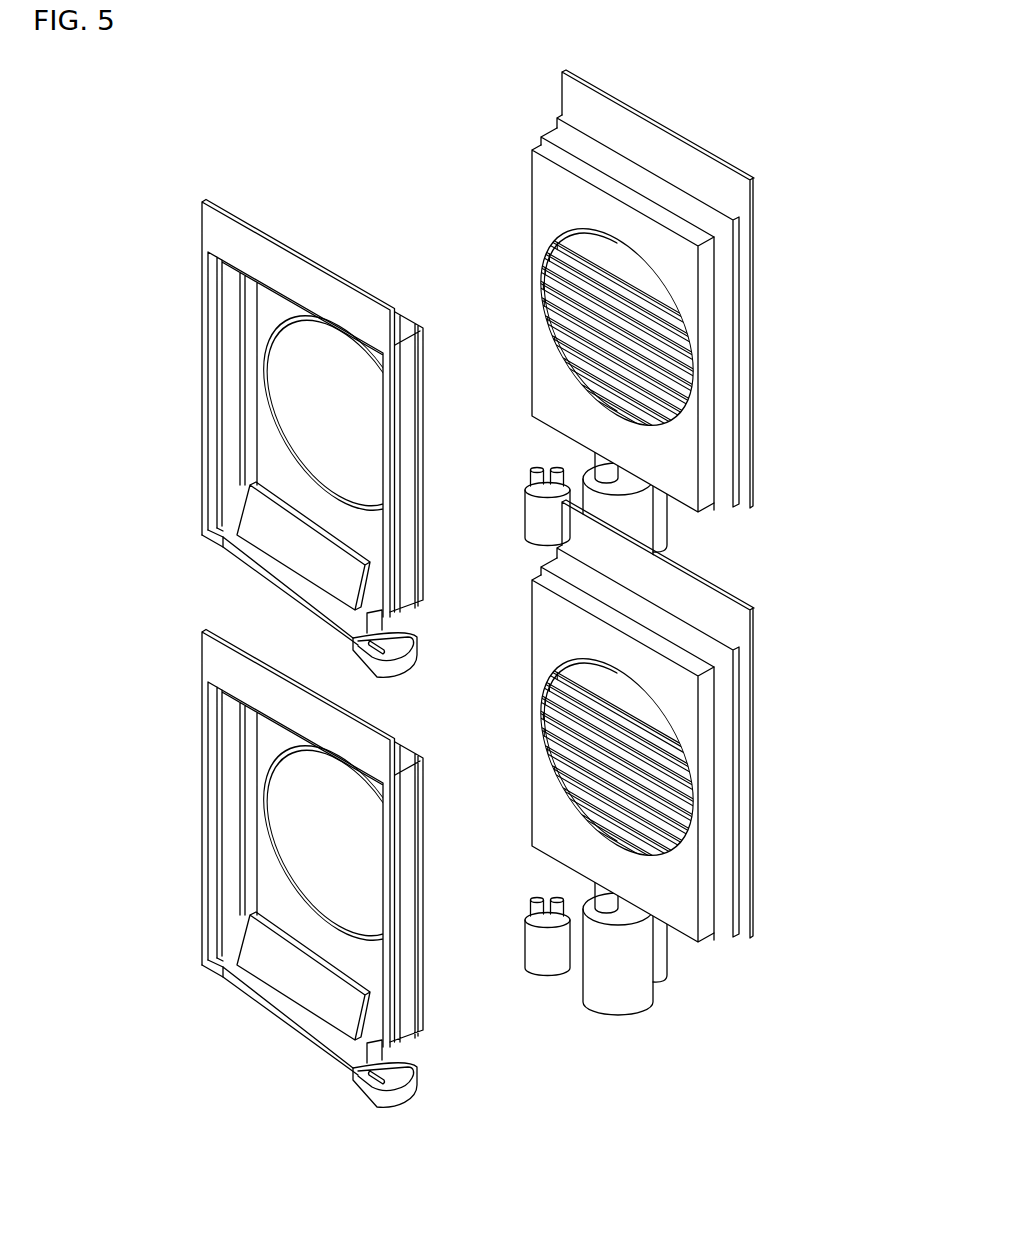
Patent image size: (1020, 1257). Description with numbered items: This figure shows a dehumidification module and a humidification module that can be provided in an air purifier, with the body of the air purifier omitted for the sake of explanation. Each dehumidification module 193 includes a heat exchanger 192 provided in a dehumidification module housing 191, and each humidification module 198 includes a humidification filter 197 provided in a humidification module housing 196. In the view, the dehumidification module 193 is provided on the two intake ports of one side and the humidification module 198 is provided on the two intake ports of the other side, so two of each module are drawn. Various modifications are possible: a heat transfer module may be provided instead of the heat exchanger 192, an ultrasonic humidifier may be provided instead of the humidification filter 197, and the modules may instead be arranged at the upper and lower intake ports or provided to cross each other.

The dehumidification module housing 191 is at (722, 304).
The heat exchanger 192 is at (683, 341).
The dehumidification module 193 is at (718, 542).
The humidification module housing 196 is at (235, 440).
The humidification filter 197 is at (245, 515).
The humidification module 198 is at (239, 654).